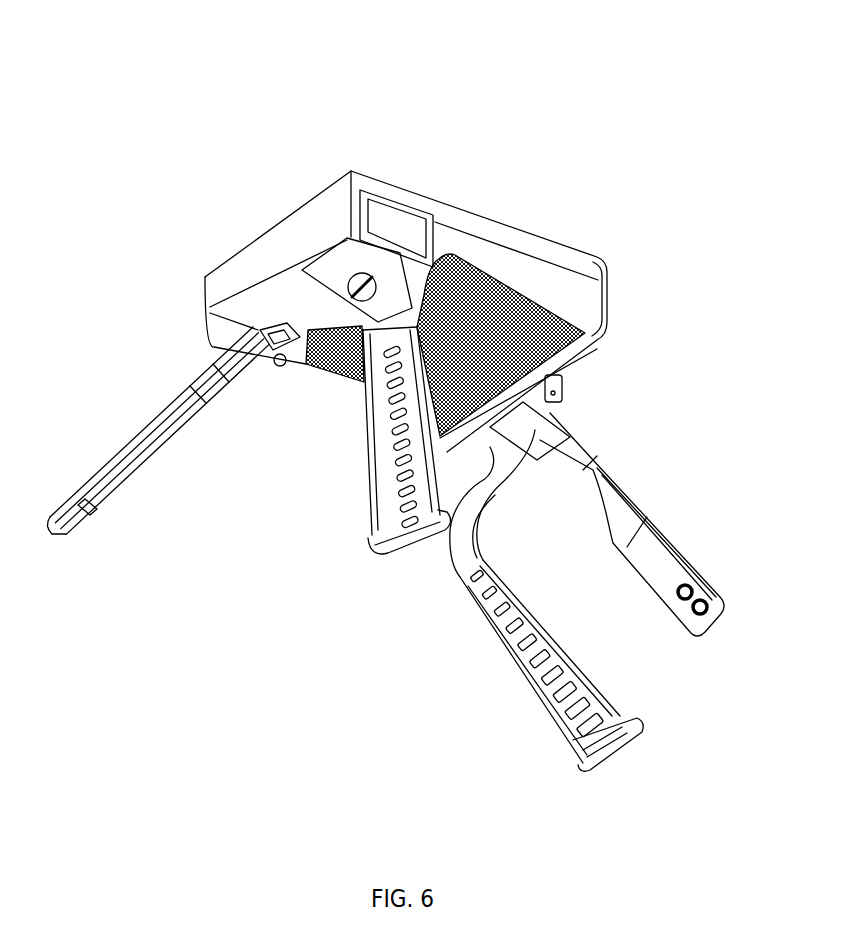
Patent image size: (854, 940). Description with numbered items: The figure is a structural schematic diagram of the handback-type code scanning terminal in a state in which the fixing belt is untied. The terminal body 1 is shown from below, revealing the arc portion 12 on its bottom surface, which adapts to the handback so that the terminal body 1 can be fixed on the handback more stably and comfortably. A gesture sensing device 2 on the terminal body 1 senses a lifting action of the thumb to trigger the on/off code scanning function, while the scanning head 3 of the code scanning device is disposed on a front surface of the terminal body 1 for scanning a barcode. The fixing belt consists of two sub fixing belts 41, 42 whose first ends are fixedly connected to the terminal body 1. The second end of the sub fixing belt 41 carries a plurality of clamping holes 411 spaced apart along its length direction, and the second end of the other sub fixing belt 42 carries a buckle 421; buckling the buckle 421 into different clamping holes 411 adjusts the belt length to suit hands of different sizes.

The terminal body 1 is at (528, 257).
The gesture sensing device 2 is at (352, 275).
The scanning head 3 is at (383, 227).
The arc portion 12 is at (543, 300).
The sub fixing belt 41 is at (450, 567).
The clamping holes 411 is at (533, 687).
The sub fixing belt 42 is at (140, 447).
The buckle 421 is at (90, 520).